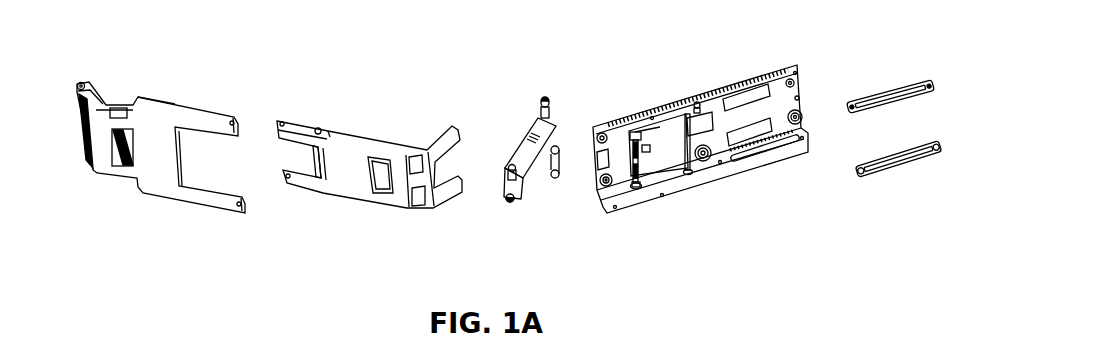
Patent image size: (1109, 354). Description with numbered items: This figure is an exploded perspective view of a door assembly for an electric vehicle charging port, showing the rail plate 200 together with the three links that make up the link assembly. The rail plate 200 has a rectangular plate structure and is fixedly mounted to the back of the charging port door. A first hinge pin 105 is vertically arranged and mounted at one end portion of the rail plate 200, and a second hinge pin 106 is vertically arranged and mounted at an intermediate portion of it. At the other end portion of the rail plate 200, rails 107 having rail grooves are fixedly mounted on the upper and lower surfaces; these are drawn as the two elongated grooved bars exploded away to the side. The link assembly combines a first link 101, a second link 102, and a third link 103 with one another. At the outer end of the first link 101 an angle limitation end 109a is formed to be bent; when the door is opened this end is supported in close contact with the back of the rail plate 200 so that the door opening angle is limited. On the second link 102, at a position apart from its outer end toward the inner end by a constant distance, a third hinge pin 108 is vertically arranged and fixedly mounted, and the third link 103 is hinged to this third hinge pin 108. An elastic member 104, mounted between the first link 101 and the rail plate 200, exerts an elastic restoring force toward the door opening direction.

The first link 101 is at (167, 196).
The second link 102 is at (339, 199).
The third link 103 is at (530, 170).
The elastic member 104 is at (630, 175).
The first hinge pin 105 is at (645, 183).
The second hinge pin 106 is at (698, 155).
The rails 107 is at (843, 113).
The third hinge pin 108 is at (312, 157).
The angle limitation end 109a is at (84, 99).
The rail plate 200 is at (684, 93).